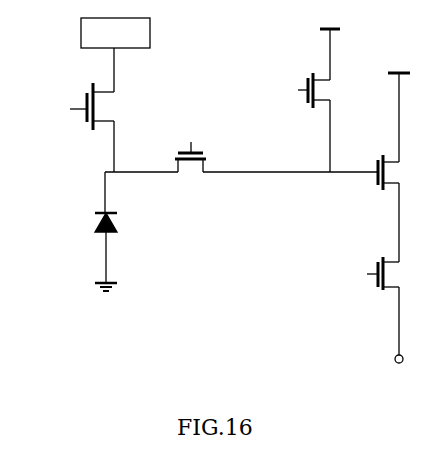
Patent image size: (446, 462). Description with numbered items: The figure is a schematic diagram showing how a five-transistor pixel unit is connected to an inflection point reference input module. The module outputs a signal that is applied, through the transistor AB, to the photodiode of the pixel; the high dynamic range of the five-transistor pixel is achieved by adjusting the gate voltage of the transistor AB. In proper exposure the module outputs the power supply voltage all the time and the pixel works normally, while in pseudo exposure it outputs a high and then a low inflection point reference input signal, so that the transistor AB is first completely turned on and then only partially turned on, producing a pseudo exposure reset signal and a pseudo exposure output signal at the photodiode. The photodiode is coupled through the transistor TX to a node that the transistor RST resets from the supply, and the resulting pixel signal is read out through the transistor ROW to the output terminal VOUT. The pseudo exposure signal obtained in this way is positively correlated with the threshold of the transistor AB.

The transistor AB is at (70, 127).
The transistor TX is at (190, 148).
The transistor RST is at (296, 100).
The transistor ROW is at (362, 273).
The output terminal VOUT is at (369, 325).